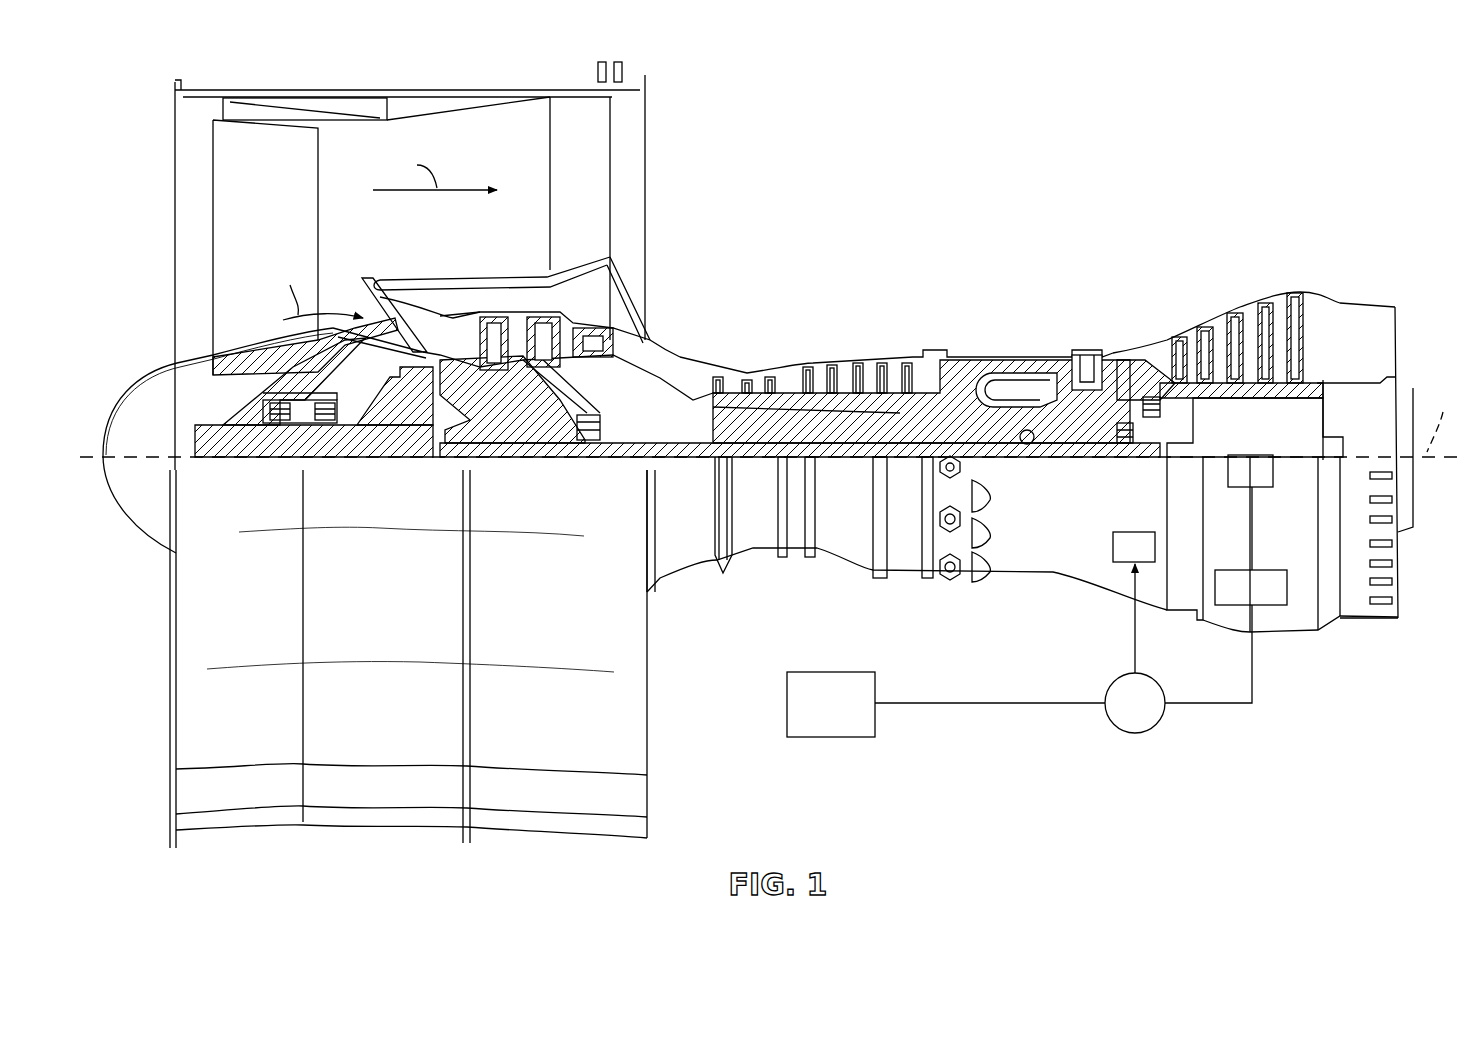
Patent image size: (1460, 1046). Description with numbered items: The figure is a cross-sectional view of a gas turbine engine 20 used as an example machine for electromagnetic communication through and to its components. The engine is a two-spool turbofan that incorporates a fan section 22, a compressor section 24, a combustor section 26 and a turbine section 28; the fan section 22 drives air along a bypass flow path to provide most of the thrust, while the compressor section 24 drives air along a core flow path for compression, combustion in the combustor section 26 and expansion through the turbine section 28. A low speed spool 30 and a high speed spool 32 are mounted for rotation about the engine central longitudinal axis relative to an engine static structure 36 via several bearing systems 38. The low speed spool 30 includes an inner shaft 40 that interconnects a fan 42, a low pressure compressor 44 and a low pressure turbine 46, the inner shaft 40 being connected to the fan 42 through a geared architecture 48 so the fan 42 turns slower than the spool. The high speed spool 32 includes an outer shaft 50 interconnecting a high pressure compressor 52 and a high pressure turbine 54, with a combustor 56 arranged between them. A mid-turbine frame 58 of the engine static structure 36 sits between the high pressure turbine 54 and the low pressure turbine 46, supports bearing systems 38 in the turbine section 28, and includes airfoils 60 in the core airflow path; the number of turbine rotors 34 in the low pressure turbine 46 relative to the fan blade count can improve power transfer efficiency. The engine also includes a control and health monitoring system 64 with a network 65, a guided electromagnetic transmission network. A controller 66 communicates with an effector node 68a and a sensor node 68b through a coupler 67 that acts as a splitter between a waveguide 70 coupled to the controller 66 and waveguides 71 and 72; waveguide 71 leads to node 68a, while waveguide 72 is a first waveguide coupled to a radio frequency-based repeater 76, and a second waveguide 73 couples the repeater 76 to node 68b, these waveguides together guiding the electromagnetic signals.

The gas turbine engine 20 is at (770, 437).
The fan section 22 is at (452, 82).
The compressor section 24 is at (838, 235).
The combustor section 26 is at (905, 335).
The turbine section 28 is at (1257, 387).
The low speed spool 30 is at (870, 463).
The high speed spool 32 is at (920, 407).
The turbine rotors 34 is at (1340, 402).
The engine static structure 36 is at (908, 575).
The bearing systems 38 is at (277, 440).
The inner shaft 40 is at (658, 463).
The fan 42 is at (290, 212).
The low pressure compressor 44 is at (565, 335).
The low pressure turbine 46 is at (1260, 312).
The geared architecture 48 is at (415, 425).
The outer shaft 50 is at (1040, 440).
The high pressure compressor 52 is at (827, 427).
The high pressure turbine 54 is at (1087, 352).
The combustor 56 is at (1012, 378).
The mid-turbine frame 58 is at (1140, 338).
The airfoils 60 is at (1130, 363).
The control and health monitoring system 64 is at (1045, 629).
The network 65 is at (1276, 603).
The controller 66 is at (787, 705).
The coupler 67 is at (1130, 733).
The effector node 68a is at (1113, 548).
The sensor node 68b is at (1262, 487).
The waveguide 70 is at (943, 703).
The waveguide 71 is at (1133, 637).
The first waveguide 72 is at (1253, 683).
The second waveguide 73 is at (1253, 548).
The radio frequency-based repeater 76 is at (1258, 607).